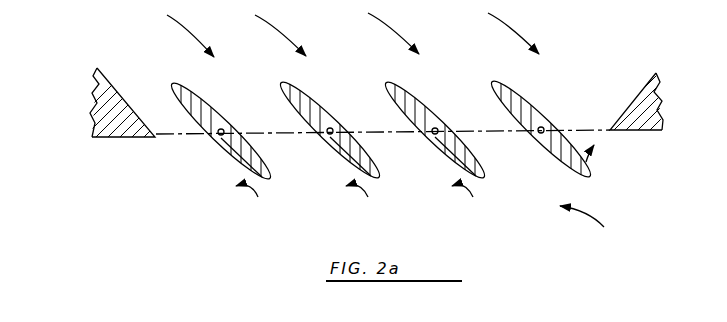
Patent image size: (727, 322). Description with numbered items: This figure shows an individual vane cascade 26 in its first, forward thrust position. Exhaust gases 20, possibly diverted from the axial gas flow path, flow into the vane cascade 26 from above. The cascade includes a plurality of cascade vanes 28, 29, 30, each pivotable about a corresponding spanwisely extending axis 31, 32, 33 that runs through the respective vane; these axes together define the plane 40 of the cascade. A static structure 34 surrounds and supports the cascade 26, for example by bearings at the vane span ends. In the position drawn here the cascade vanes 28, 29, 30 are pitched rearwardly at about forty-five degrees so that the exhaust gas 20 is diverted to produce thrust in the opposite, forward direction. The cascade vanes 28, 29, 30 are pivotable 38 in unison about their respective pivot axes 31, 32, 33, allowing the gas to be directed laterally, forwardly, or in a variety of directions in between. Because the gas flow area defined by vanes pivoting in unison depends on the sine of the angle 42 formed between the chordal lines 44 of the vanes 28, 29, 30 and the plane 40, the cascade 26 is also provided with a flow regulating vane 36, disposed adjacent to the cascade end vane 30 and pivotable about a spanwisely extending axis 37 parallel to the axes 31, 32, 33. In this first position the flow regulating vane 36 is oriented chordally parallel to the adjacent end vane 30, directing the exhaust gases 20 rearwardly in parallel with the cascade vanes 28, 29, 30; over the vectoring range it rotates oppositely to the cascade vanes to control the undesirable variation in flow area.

The exhaust gases 20 is at (168, 26).
The vane cascade 26 is at (593, 220).
The cascade vane 28 is at (193, 92).
The cascade vane 29 is at (302, 91).
The cascade end vane 30 is at (410, 91).
The pivot axis 31 is at (224, 129).
The pivot axis 32 is at (333, 128).
The pivot axis 33 is at (440, 128).
The static structure 34 is at (96, 106).
The flow regulating vane 36 is at (520, 91).
The pivot axis of flow regulating vane 37 is at (547, 128).
The pivoting motion 38 is at (367, 200).
The plane of the cascade 40 is at (170, 137).
The vane angle 42 is at (366, 148).
The chordal line 44 is at (236, 148).